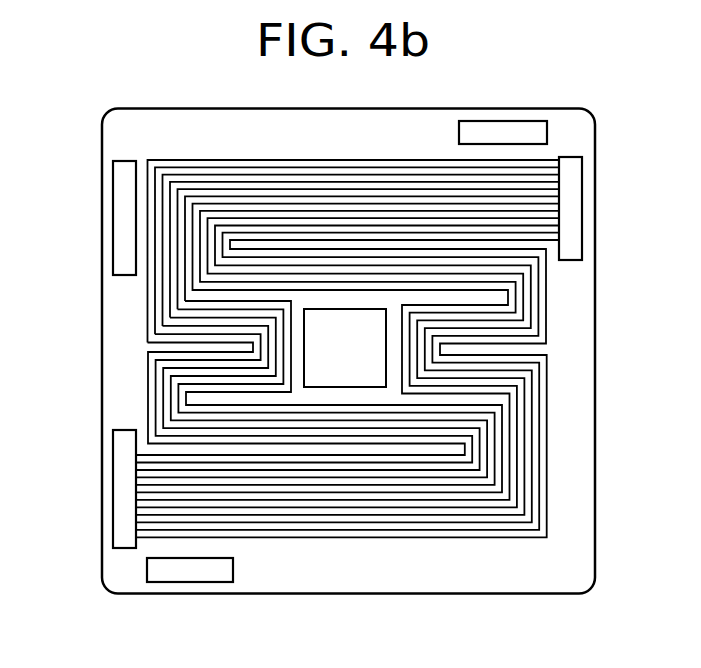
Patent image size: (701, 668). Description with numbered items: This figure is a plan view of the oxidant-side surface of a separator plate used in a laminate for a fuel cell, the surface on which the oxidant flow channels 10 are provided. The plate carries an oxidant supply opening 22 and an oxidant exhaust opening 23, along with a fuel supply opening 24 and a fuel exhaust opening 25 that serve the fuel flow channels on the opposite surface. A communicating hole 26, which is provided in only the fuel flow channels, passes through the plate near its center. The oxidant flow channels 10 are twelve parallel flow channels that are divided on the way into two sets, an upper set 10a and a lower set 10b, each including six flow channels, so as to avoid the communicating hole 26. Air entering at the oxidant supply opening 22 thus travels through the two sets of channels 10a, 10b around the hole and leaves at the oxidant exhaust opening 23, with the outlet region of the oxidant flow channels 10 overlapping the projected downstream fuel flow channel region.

The oxidant flow channels 10 is at (346, 348).
The first heater section 10a is at (165, 233).
The second heater section 10b is at (533, 290).
The oxidant supply opening 22 is at (572, 172).
The oxidant exhaust opening 23 is at (124, 510).
The fuel supply opening 24 is at (515, 130).
The fuel exhaust opening 25 is at (191, 581).
The communicating hole 26 is at (373, 357).